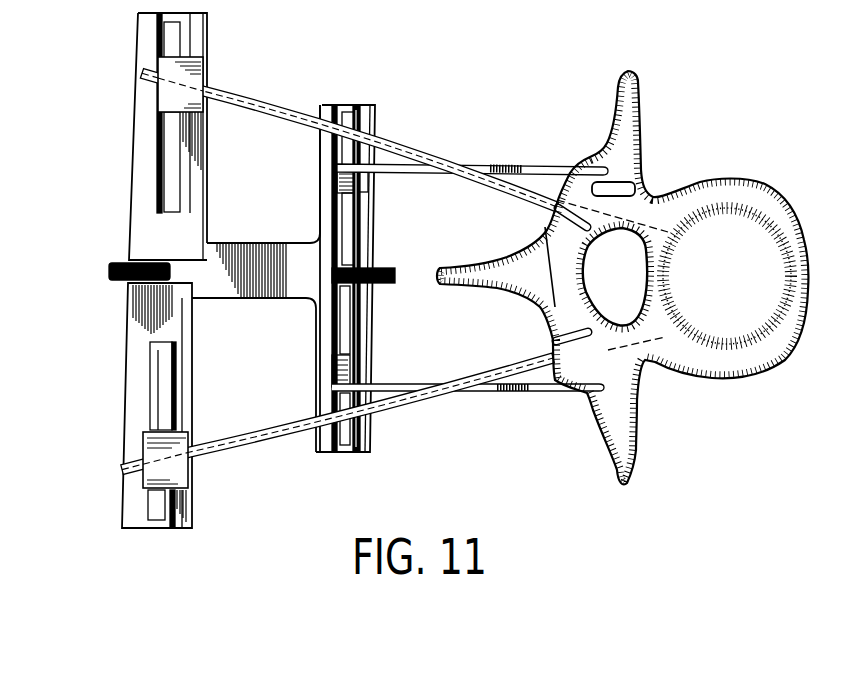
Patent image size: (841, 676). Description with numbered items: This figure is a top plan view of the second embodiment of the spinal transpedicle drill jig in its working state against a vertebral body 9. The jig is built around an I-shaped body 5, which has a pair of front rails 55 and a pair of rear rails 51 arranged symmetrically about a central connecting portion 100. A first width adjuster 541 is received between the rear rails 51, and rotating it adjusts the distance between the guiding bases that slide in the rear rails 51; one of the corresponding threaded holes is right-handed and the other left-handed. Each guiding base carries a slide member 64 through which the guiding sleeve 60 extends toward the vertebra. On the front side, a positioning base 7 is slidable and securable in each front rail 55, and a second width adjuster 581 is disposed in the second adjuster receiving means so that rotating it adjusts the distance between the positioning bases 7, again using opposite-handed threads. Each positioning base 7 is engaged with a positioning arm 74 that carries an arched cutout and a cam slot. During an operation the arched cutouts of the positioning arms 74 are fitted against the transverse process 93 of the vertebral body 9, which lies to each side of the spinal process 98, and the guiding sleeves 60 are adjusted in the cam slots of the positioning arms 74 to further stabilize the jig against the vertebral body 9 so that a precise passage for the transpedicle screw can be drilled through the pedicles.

The I-shaped body 5 is at (129, 224).
The rear rail 51 is at (126, 388).
The first width adjuster 541 is at (108, 270).
The central connecting portion 100 is at (282, 250).
The front rail 55 is at (372, 333).
The positioning base 7 is at (366, 180).
The second width adjuster 581 is at (391, 268).
The positioning arm 74 is at (515, 165).
The guiding sleeve 60 is at (287, 113).
The slide block 64 is at (207, 61).
The vertebral body 9 is at (800, 233).
The transverse process 93 is at (640, 93).
The spinal process 98 is at (471, 276).